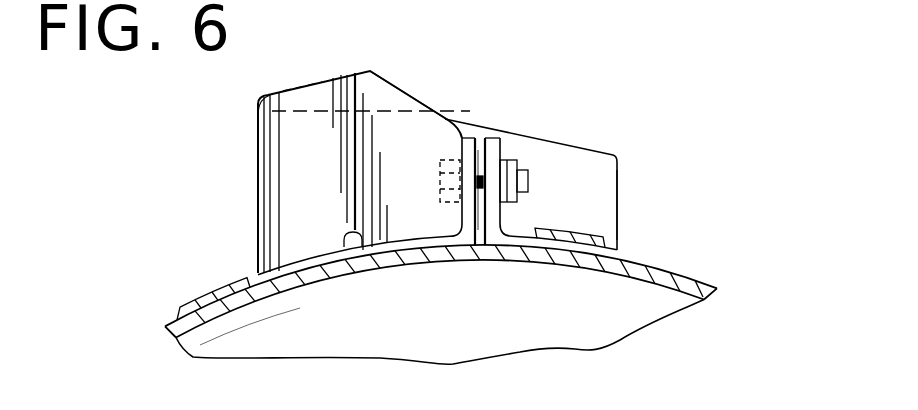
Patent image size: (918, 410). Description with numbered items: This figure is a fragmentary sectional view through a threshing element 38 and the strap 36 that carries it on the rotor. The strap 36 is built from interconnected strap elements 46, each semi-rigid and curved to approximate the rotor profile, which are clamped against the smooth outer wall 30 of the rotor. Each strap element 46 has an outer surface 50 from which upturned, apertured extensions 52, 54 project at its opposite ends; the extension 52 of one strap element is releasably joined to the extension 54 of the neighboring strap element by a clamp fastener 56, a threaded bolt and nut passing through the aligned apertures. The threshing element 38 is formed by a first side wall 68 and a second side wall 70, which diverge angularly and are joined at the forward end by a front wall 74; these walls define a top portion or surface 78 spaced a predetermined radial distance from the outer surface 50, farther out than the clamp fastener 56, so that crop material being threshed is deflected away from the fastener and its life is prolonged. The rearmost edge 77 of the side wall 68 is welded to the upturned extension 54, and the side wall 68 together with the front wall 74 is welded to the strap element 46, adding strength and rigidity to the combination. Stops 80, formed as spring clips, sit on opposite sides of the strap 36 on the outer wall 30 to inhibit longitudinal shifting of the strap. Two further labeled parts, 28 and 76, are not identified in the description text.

The panel core 28 is at (568, 260).
The smooth outer wall 30 is at (663, 275).
The strap 36 is at (156, 320).
The threshing element 38 is at (250, 230).
The strap element 46 is at (212, 313).
The outer surface 50 is at (362, 250).
The upturned extension 52 is at (496, 140).
The upturned extension 54 is at (470, 138).
The clamp fastener 56 is at (525, 134).
The first side wall 68 is at (334, 214).
The second side wall 70 is at (565, 167).
The front wall 74 is at (258, 160).
The housing top wall 76 is at (400, 140).
The rearmost edge 77 is at (478, 216).
The top portion 78 is at (295, 84).
The stop 80 is at (203, 285).